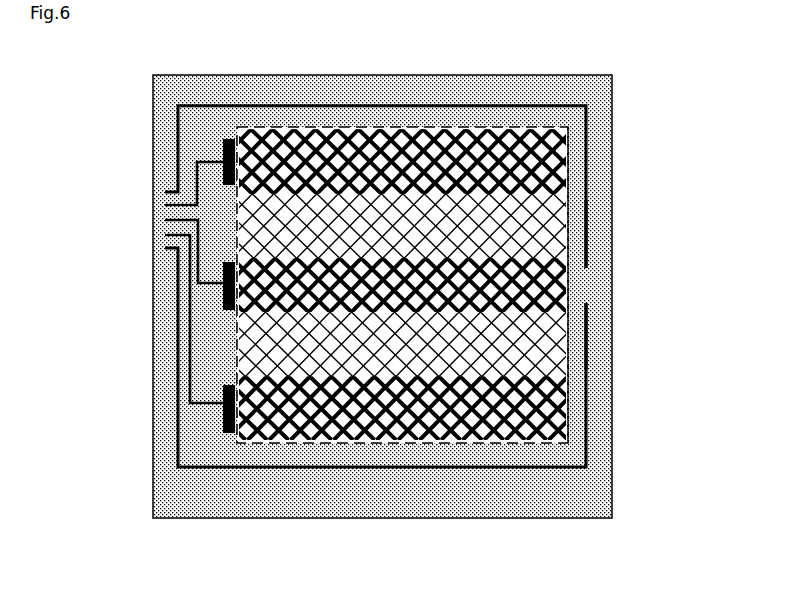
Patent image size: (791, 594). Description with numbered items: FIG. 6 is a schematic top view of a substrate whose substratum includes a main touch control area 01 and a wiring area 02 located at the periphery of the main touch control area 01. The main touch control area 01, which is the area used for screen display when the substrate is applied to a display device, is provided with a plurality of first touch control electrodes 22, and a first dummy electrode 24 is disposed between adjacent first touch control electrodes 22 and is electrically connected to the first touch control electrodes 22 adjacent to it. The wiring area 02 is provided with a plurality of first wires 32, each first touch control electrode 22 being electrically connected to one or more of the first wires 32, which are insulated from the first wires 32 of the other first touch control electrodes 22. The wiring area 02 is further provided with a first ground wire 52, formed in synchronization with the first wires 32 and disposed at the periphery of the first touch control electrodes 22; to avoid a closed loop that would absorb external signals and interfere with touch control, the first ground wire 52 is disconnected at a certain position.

The main touch control area 01 is at (558, 128).
The wiring area 02 is at (500, 97).
The first touch control electrodes 22 is at (567, 149).
The first dummy electrode 24 is at (568, 210).
The first wires 32 is at (178, 267).
The first ground wire 52 is at (230, 104).